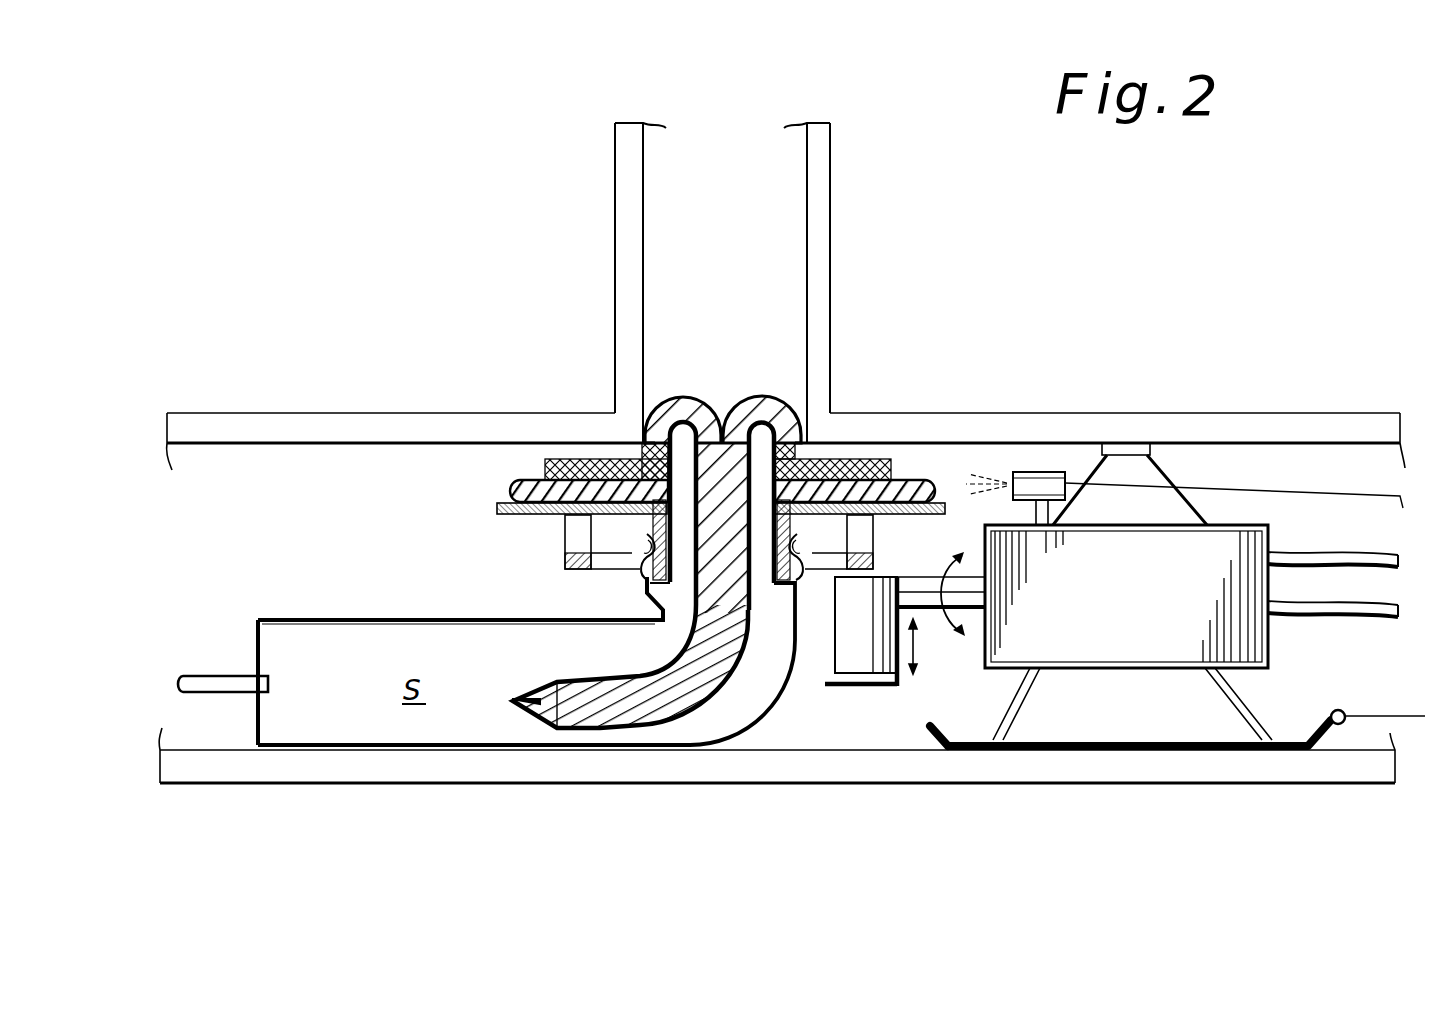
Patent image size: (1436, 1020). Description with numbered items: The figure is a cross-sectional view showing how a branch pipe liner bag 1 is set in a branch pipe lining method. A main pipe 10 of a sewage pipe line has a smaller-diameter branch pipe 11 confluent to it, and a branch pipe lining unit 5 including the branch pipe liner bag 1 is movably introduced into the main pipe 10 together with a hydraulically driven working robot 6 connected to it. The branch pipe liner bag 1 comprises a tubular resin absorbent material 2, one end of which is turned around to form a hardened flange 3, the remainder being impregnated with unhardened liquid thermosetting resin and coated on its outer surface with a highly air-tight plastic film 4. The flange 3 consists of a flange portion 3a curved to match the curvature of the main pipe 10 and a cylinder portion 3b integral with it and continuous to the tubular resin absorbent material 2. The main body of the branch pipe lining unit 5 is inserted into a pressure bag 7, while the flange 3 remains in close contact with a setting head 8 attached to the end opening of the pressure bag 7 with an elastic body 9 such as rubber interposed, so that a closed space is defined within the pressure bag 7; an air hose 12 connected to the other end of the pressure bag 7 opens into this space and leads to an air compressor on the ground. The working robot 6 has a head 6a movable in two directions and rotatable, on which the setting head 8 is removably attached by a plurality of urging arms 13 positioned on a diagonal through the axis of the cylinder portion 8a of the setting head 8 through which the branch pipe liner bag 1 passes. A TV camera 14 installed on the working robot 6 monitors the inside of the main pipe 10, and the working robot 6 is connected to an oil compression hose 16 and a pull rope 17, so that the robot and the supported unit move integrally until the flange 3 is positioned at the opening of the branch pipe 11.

The branch pipe liner bag 1 is at (748, 392).
The tubular resin absorbent material 2 is at (730, 655).
The flange 3 is at (932, 358).
The flange portion 3a is at (890, 450).
The cylinder portion 3b is at (820, 441).
The plastic film 4 is at (626, 678).
The branch pipe lining unit 5 is at (452, 610).
The working robot 6 is at (1268, 668).
The head 6a is at (832, 686).
The pressure bag 7 is at (322, 618).
The setting head 8 is at (894, 508).
The cylinder portion 8a is at (650, 542).
The elastic body 9 is at (917, 493).
The main pipe 10 is at (1038, 786).
The branch pipe 11 is at (832, 207).
The air hose 12 is at (206, 675).
The urging arms 13 is at (564, 536).
The TV camera 14 is at (1040, 470).
The oil compression hose 16 is at (1337, 607).
The pull rope 17 is at (1398, 716).